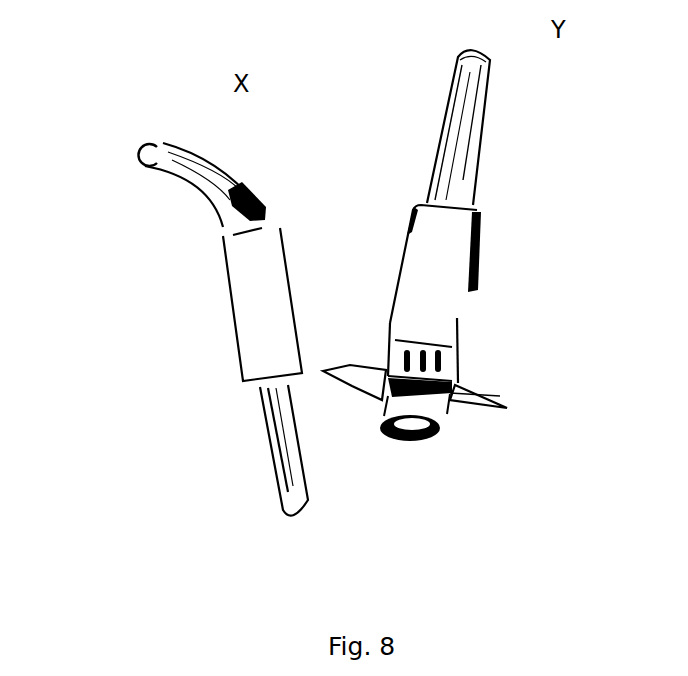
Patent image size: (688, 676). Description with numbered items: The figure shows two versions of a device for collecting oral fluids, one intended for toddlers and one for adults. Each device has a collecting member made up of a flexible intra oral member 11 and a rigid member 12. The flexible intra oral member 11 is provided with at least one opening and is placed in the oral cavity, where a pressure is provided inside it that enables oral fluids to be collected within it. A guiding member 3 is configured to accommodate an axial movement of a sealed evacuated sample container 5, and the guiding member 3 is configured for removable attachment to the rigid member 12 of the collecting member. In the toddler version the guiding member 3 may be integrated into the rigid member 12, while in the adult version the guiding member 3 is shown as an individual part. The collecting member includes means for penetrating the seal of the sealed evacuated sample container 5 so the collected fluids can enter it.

The guiding member 3 is at (476, 262).
The sealed evacuated sample container 5 is at (478, 137).
The flexible intra oral member 11 is at (141, 158).
The rigid member 12 is at (468, 390).